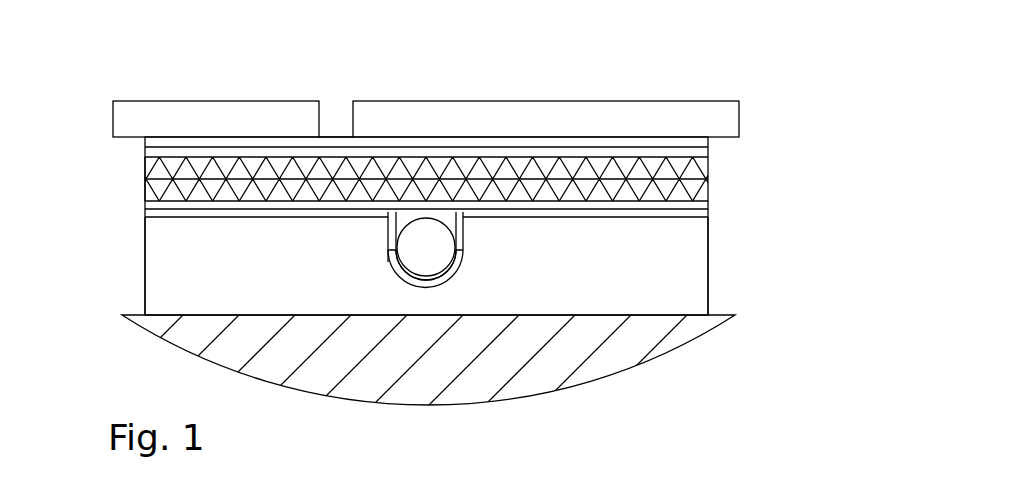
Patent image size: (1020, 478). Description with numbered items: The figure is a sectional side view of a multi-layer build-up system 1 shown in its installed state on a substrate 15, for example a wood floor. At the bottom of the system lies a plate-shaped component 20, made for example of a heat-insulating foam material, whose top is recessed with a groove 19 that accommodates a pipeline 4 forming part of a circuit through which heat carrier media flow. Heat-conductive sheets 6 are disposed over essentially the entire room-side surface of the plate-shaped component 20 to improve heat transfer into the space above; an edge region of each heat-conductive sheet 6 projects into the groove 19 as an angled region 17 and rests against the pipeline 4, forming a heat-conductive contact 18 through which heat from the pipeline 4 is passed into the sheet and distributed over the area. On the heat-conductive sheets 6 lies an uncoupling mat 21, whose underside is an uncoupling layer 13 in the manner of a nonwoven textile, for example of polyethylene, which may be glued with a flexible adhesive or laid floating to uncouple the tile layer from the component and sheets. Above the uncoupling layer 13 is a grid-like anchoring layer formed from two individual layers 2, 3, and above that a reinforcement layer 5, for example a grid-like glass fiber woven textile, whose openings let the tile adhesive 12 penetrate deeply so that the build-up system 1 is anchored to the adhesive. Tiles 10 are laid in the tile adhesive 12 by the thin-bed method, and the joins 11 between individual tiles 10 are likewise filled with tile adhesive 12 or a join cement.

The build-up system 1 is at (629, 76).
The anchoring layer 2 is at (707, 163).
The anchoring layer 3 is at (707, 196).
The pipeline 4 is at (428, 246).
The reinforcement layer 5 is at (492, 153).
The heat-conductive sheet 6 is at (165, 214).
The tile 10 is at (138, 123).
The join 11 is at (335, 120).
The tile adhesive 12 is at (237, 143).
The uncoupling layer 13 is at (167, 203).
The substrate 15 is at (648, 372).
The angled region of heat-conductive sheet 17 is at (472, 259).
The contact of heat-conductive sheet/pipeline 18 is at (368, 264).
The groove 19 is at (402, 272).
The plate-shaped component 20 is at (158, 297).
The uncoupling mat 21 is at (135, 168).